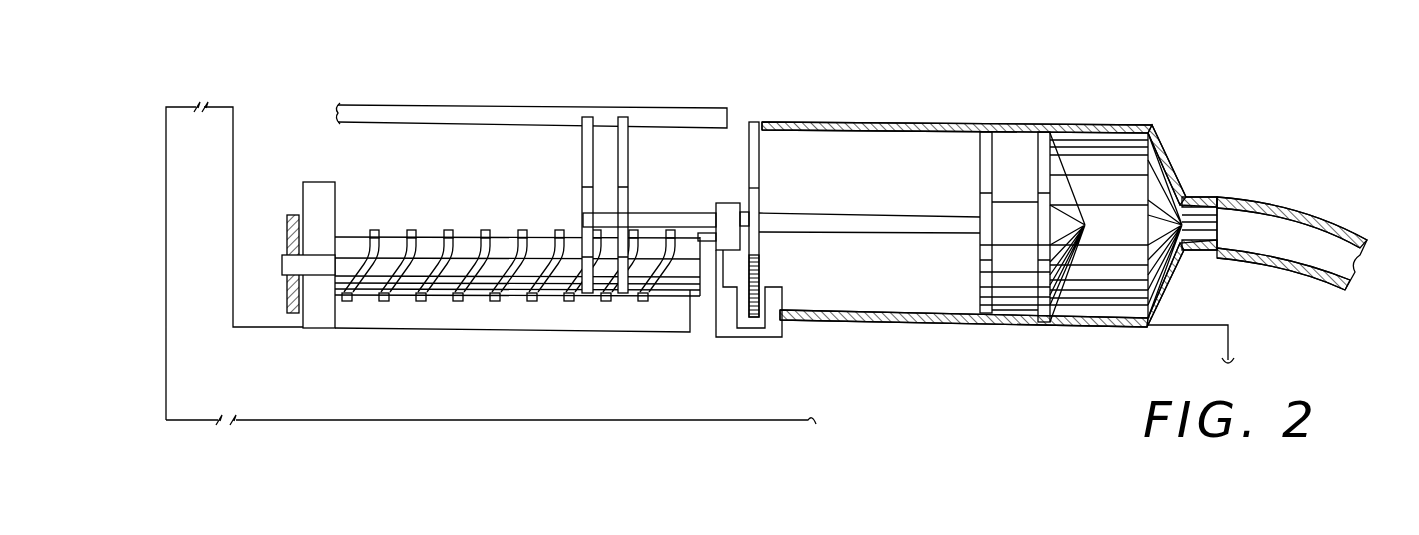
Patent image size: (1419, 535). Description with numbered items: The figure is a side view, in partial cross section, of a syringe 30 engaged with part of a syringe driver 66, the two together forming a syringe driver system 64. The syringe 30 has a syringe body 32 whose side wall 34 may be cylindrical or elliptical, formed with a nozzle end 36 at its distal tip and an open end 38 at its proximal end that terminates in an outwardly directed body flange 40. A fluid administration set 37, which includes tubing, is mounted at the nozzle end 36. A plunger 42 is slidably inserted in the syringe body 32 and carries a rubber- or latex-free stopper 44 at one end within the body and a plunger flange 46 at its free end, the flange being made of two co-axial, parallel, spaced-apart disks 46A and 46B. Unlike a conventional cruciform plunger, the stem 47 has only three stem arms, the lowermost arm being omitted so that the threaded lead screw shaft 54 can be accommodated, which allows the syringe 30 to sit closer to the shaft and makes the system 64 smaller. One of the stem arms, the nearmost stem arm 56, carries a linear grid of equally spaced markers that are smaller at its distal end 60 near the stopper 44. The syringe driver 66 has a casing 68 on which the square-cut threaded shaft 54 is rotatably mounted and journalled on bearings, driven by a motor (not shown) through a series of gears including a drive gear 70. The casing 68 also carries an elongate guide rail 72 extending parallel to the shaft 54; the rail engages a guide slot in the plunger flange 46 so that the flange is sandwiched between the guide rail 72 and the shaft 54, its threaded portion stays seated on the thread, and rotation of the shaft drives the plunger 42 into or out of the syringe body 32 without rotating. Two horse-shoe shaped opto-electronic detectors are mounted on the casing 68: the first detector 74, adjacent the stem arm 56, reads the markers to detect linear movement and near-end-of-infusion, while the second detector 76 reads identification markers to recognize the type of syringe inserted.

The syringe 30 is at (1014, 178).
The syringe body 32 is at (1057, 120).
The side wall 34 is at (1110, 125).
The nozzle end 36 is at (1196, 203).
The fluid administration set 37 is at (1278, 208).
The open end 38 is at (760, 170).
The body flange 40 is at (753, 320).
The plunger 42 is at (676, 213).
The stopper 44 is at (1062, 287).
The plunger flange 46 is at (527, 68).
The disk 46A is at (588, 117).
The disk 46B is at (623, 117).
The stem 47 is at (648, 158).
The threaded lead screw shaft 54 is at (512, 297).
The stem arm 56 is at (912, 217).
The distal end 60 is at (693, 116).
The syringe driver system 64 is at (1214, 274).
The syringe driver 66 is at (380, 176).
The casing 68 is at (415, 332).
The drive gear 70 is at (290, 218).
The guide rail 72 is at (760, 122).
The first detector 74 is at (728, 230).
The second detector 76 is at (770, 322).